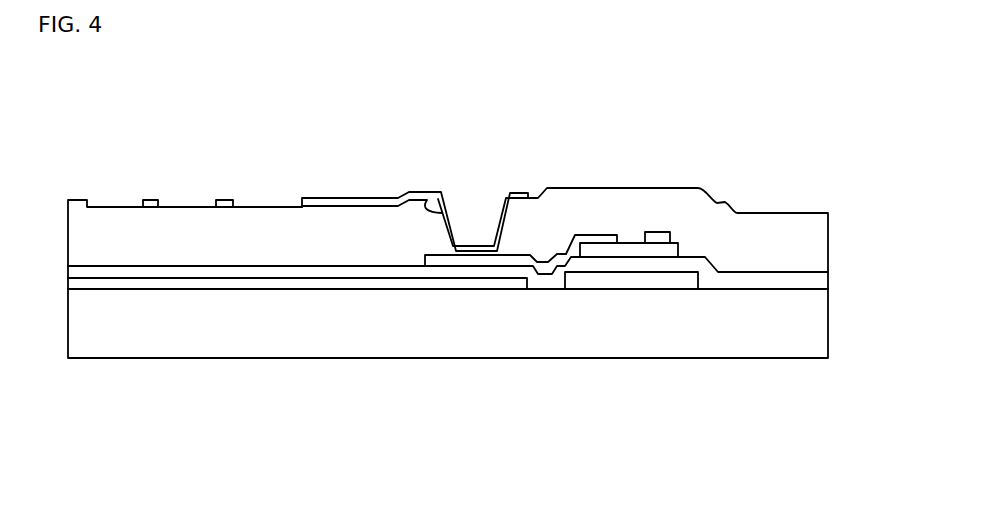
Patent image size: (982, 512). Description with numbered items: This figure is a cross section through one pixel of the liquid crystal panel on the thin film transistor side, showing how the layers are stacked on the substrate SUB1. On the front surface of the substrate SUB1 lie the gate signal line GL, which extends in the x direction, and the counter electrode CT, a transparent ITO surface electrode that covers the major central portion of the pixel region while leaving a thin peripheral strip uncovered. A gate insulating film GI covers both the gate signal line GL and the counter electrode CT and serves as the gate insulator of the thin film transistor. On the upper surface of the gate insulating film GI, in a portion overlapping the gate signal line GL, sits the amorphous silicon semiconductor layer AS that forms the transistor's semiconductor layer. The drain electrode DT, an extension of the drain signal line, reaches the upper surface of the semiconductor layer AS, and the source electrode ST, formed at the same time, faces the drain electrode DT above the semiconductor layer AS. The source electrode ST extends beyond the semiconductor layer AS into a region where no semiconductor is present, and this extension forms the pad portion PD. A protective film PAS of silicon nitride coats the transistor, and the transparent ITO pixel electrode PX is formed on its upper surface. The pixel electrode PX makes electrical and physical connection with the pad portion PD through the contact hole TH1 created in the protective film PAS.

The substrate SUB1 is at (247, 333).
The counter electrode CT is at (348, 290).
The gate signal line GL is at (652, 282).
The gate insulating film GI is at (170, 271).
The pad portion PD is at (477, 262).
The amorphous semiconductor layer AS is at (612, 252).
The source electrode ST is at (593, 232).
The drain electrode DT is at (663, 232).
The protective film PAS is at (743, 230).
The contact hole TH1 is at (430, 192).
The pixel electrode PX is at (152, 197).